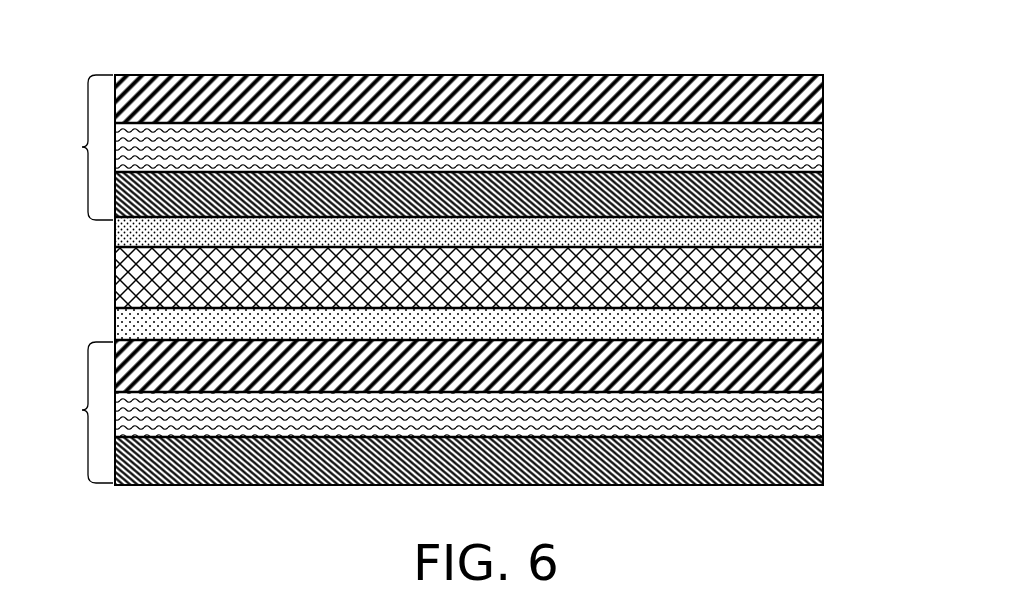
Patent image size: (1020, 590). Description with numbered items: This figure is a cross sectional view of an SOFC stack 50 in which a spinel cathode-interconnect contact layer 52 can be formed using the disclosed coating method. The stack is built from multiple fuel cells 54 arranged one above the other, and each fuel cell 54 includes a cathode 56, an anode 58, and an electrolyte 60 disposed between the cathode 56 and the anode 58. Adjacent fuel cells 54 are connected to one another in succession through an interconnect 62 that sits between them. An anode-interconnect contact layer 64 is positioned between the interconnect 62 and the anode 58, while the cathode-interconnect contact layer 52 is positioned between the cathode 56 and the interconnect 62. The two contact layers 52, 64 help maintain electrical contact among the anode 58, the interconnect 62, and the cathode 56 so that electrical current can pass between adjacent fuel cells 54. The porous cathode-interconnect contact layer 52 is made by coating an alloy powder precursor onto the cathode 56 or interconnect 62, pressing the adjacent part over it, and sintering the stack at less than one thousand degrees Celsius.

The SOFC stack 50 is at (76, 262).
The cathode-interconnect contact layer 52 is at (823, 235).
The fuel cell 54 is at (82, 147).
The cathode 56 is at (823, 198).
The anode 58 is at (823, 98).
The electrolyte 60 is at (823, 155).
The interconnect 62 is at (823, 277).
The anode-interconnect contact layer 64 is at (823, 322).